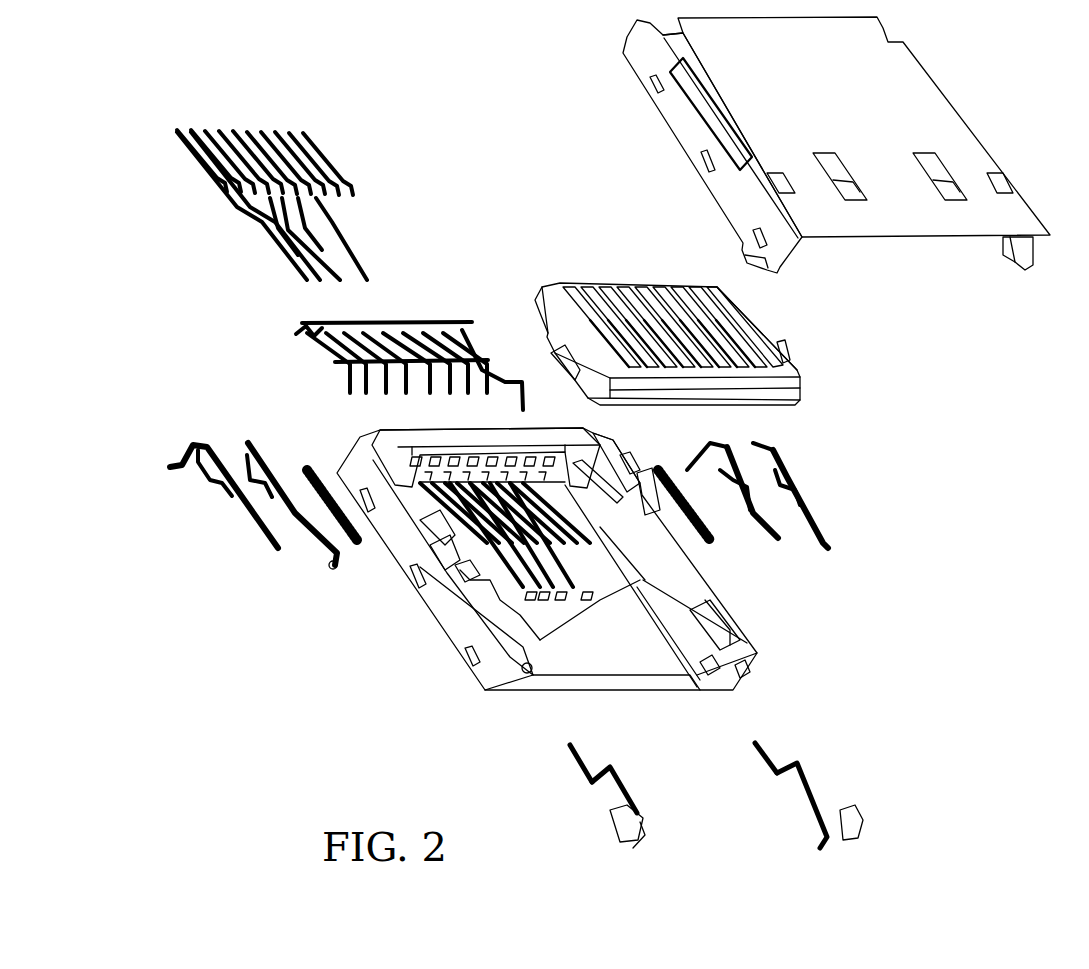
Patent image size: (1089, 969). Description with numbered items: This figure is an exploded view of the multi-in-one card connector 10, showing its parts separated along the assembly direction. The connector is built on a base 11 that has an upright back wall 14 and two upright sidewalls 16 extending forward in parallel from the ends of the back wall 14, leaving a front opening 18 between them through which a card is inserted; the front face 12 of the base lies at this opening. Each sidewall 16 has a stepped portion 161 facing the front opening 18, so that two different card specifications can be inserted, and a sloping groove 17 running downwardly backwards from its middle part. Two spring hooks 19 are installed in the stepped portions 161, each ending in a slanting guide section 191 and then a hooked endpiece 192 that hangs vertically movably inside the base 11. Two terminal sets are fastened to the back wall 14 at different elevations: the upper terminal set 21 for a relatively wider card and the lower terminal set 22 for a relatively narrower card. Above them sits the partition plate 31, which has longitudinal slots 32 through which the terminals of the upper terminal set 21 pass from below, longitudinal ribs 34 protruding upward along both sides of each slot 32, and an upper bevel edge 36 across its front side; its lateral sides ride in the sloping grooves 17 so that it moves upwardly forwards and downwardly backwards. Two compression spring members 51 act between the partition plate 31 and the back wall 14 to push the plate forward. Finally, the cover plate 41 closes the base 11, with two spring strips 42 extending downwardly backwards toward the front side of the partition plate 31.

The multi-in-one card connector 10 is at (318, 683).
The base 11 is at (551, 577).
The front face 12 is at (548, 692).
The upright back wall 14 is at (415, 433).
The upright sidewalls 16 is at (495, 672).
The stepped portion 161 is at (525, 672).
The sloping groove 17 is at (672, 573).
The front opening 18 is at (617, 667).
The spring hooks 19 is at (731, 790).
The slanting guide section 191 is at (600, 790).
The hooked endpiece 192 is at (590, 755).
The upper terminal set 21 is at (472, 325).
The lower terminal set 22 is at (337, 172).
The partition plate 31 is at (723, 342).
The longitudinal slots 32 is at (690, 348).
The longitudinal ribs 34 is at (650, 293).
The upper bevel edge 36 is at (797, 387).
The cover plate 41 is at (960, 95).
The spring strips 42 is at (950, 180).
The spring members 51 is at (305, 467).